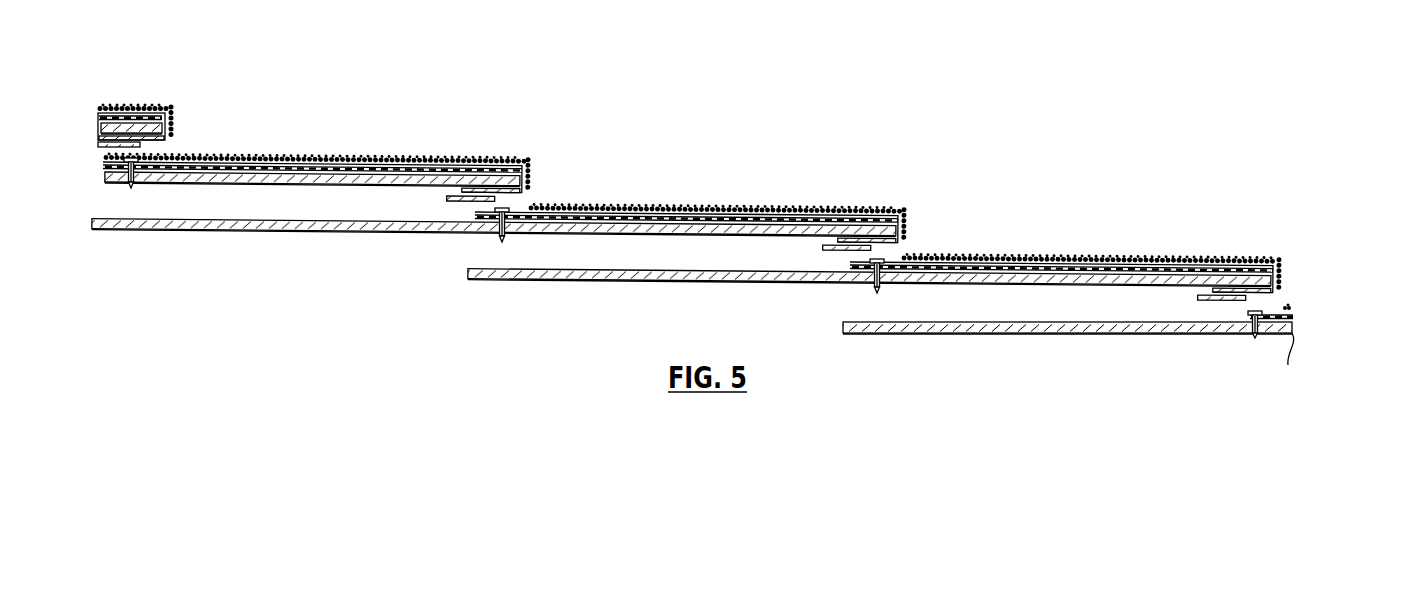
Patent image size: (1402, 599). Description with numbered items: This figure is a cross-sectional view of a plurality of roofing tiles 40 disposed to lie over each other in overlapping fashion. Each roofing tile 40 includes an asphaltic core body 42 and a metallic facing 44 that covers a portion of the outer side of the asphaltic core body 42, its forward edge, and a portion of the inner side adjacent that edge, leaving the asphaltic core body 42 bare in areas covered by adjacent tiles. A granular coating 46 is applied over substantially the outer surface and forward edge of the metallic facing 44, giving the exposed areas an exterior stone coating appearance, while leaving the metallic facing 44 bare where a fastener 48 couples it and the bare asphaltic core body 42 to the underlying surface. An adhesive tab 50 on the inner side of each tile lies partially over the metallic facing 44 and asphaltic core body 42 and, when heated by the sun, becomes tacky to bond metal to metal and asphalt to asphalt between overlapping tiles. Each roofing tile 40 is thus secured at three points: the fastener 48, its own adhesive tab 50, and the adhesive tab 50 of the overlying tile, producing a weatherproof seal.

The roofing tile 40 is at (148, 86).
The asphaltic core body 42 is at (278, 217).
The metallic facing 44 is at (475, 217).
The granular coating 46 is at (695, 207).
The fastener 48 is at (131, 188).
The adhesive tab 50 is at (124, 156).